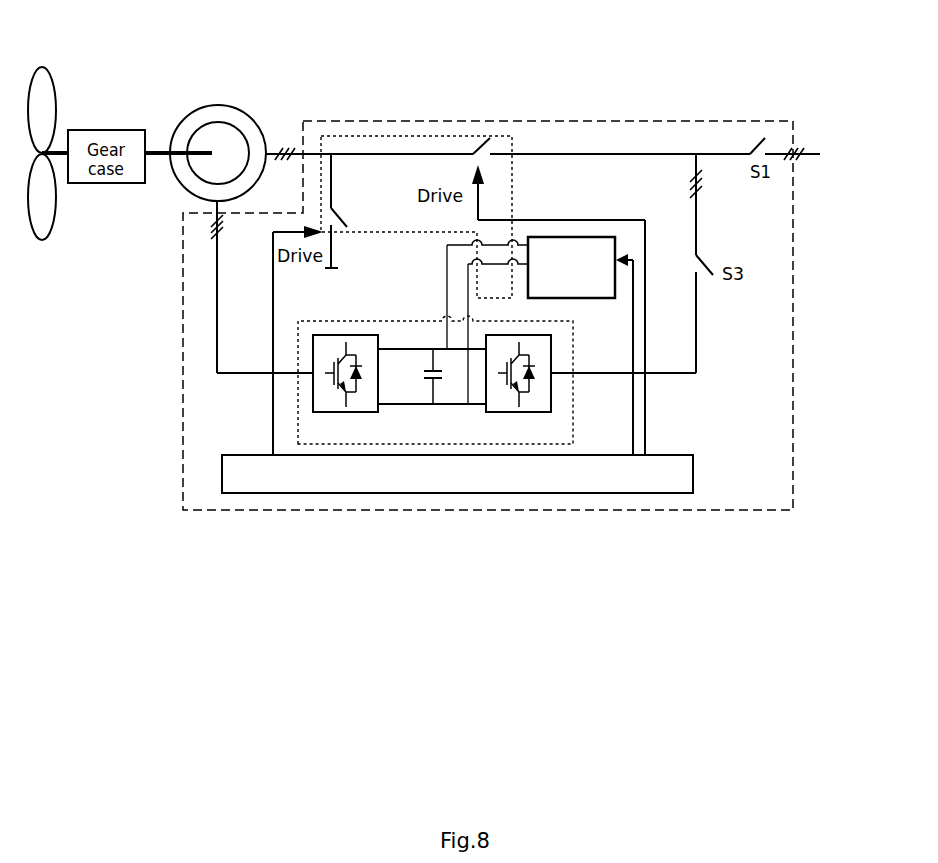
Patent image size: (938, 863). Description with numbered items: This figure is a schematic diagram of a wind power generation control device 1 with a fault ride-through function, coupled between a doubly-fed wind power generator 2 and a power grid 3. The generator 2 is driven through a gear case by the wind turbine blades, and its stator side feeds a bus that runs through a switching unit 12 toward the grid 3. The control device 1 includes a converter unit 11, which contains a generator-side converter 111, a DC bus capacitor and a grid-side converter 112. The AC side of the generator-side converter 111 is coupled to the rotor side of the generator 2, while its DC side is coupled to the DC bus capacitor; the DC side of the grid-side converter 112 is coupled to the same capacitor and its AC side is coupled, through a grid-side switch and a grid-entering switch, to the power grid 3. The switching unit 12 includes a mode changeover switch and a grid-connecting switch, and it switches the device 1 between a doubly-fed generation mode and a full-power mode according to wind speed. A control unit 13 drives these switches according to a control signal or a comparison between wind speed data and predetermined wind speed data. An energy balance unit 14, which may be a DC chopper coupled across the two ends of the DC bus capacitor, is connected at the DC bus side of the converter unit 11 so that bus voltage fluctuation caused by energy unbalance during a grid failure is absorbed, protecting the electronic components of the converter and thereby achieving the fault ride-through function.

The wind power generation control device 1 is at (620, 118).
The doubly-fed wind power generator 2 is at (262, 117).
The power grid 3 is at (819, 137).
The converter unit 11 is at (435, 362).
The switching unit 12 is at (388, 135).
The control unit 13 is at (693, 455).
The energy balance unit 14 is at (568, 237).
The generator-side converter 111 is at (370, 413).
The grid-side converter 112 is at (498, 413).